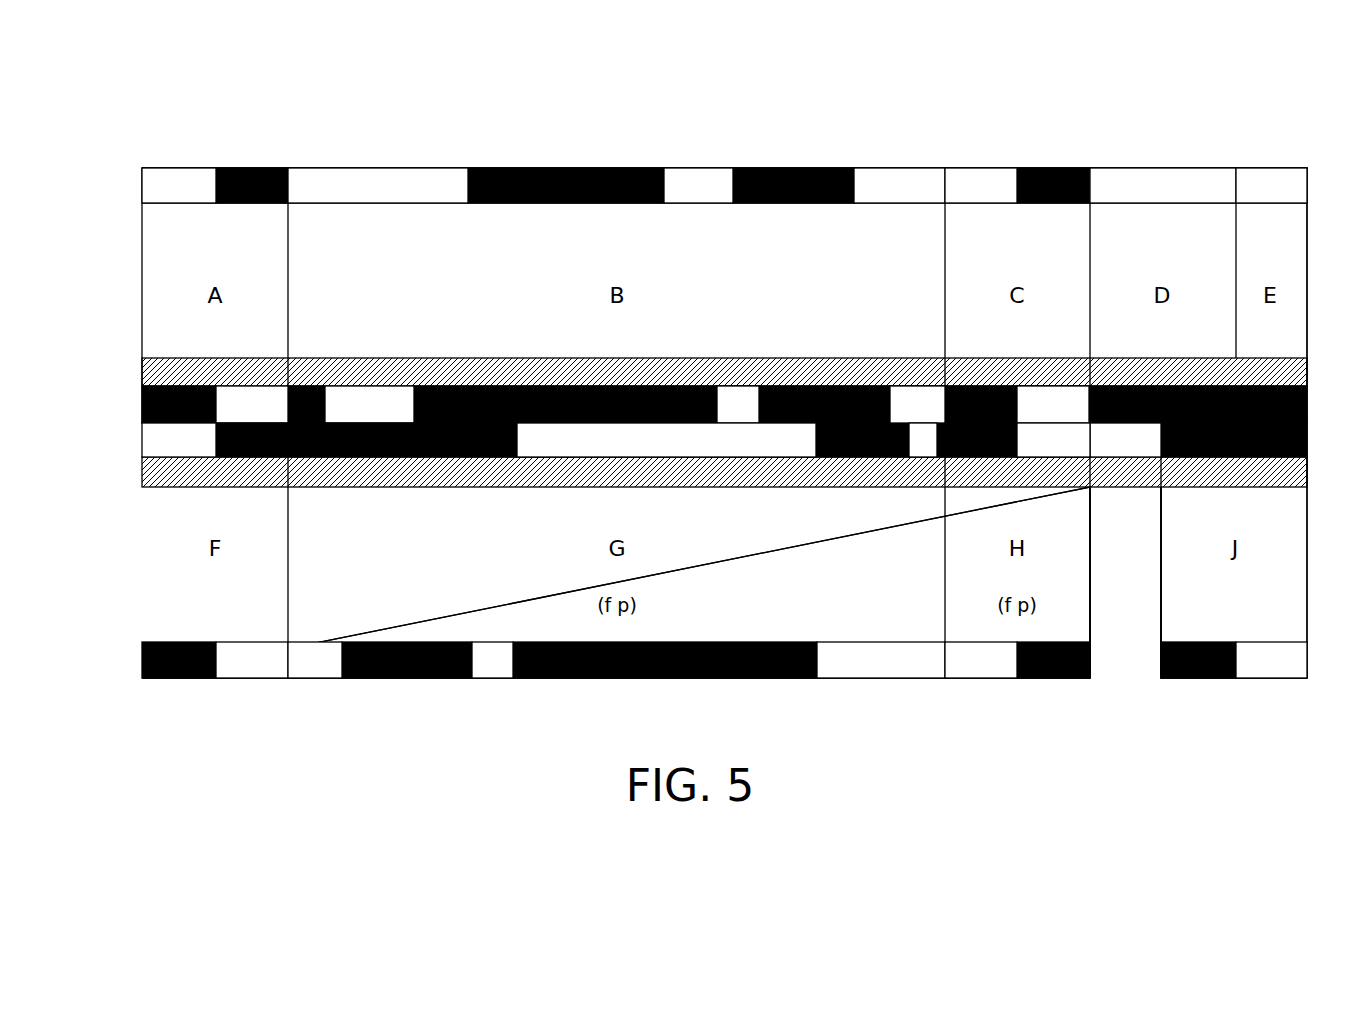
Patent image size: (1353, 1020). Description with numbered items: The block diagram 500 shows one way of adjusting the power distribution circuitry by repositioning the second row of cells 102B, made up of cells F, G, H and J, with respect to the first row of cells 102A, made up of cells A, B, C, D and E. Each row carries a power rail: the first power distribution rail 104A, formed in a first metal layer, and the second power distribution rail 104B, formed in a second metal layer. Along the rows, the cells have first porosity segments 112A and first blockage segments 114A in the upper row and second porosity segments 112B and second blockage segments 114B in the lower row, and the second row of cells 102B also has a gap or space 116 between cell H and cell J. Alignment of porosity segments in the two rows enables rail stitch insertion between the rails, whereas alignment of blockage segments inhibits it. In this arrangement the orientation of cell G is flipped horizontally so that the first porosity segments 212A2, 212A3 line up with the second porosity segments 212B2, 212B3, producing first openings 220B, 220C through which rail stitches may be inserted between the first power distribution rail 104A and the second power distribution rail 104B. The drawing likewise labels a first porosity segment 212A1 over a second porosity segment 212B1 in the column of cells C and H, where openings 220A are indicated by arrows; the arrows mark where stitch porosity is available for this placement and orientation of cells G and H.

The printed circuit board assembly 500 is at (124, 84).
The first row of cells 102A is at (125, 168).
The second row of cells 102B is at (125, 423).
The first power distribution rail 104A is at (399, 376).
The second power distribution rail 104B is at (403, 473).
The first porosity segments 112A is at (160, 168).
The second porosity segments 112B is at (180, 460).
The first blockage segments 114A is at (250, 168).
The second blockage segments 114B is at (256, 460).
The gap or space 116 is at (1126, 652).
The first opening in first substrate 212A1 is at (1030, 400).
The first porosity segment 212A2 is at (724, 397).
The first porosity segment 212A3 is at (906, 397).
The first opening in second substrate 212B1 is at (1053, 440).
The second porosity segment 212B2 is at (725, 440).
The second porosity segment 212B3 is at (922, 440).
The first connection point 220A is at (1043, 403).
The first opening 220B is at (743, 403).
The first opening 220C is at (933, 403).